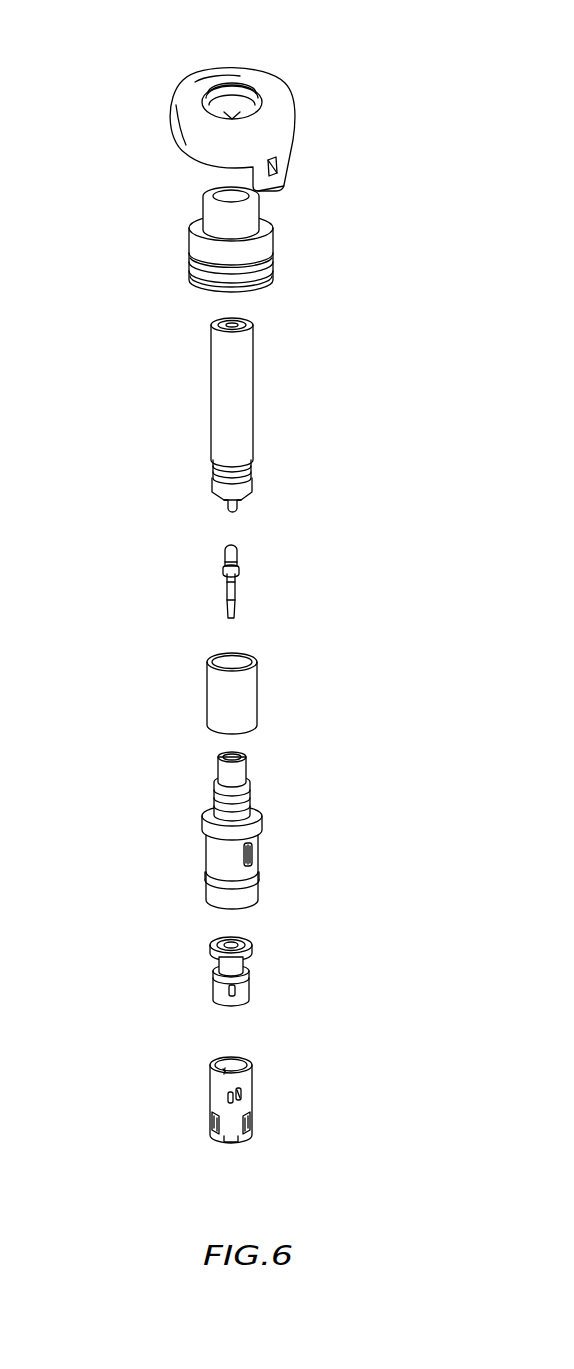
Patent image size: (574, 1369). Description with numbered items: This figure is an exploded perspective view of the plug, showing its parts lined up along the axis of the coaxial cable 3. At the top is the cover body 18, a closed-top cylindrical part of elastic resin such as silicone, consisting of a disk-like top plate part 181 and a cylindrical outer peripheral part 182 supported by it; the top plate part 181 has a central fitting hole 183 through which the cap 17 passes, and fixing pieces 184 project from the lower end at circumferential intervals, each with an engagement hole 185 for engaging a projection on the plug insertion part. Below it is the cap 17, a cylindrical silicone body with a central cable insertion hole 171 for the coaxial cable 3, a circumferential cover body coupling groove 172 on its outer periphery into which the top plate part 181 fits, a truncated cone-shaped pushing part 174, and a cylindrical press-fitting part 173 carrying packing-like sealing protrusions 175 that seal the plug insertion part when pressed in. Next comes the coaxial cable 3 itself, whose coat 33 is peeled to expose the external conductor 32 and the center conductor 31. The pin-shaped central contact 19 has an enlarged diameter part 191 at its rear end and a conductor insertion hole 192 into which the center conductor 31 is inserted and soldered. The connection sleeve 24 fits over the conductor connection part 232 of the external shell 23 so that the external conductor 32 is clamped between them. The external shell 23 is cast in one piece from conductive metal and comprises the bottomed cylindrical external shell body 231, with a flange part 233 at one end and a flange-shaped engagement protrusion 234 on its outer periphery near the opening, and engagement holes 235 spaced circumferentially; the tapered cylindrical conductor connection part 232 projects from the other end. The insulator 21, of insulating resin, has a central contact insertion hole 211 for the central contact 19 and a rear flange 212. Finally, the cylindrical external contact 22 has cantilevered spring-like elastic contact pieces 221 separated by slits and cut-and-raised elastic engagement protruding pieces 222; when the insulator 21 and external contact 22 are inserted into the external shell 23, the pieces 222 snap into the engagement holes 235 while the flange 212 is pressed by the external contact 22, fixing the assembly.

The cover body 18 is at (291, 100).
The top plate part 181 is at (215, 82).
The outer peripheral part 182 is at (185, 128).
The fitting hole 183 is at (247, 97).
The fixing piece 184 is at (285, 163).
The engagement hole 185 is at (284, 171).
The cap 17 is at (230, 241).
The cable insertion hole 171 is at (216, 188).
The cover body coupling groove 172 is at (270, 270).
The press-fitting part 173 is at (193, 267).
The pushing part 174 is at (267, 227).
The sealing protrusion 175 is at (267, 280).
The coaxial cable 3 is at (221, 418).
The center conductor 31 is at (227, 515).
The external conductor 32 is at (213, 326).
The coat 33 is at (220, 418).
The central contact 19 is at (223, 581).
The enlarged diameter part 191 is at (240, 573).
The conductor insertion hole 192 is at (228, 552).
The connection sleeve 24 is at (243, 695).
The external shell 23 is at (223, 830).
The external shell body 231 is at (215, 858).
The conductor connection part 232 is at (247, 793).
The flange part 233 is at (204, 818).
The engagement protrusion 234 is at (257, 872).
The engagement hole 235 is at (255, 853).
The insulator 21 is at (225, 960).
The contact insertion hole 211 is at (228, 933).
The flange 212 is at (247, 950).
The external contact 22 is at (230, 1134).
The elastic contact piece 221 is at (213, 1137).
The elastic engagement protruding piece 222 is at (255, 1086).